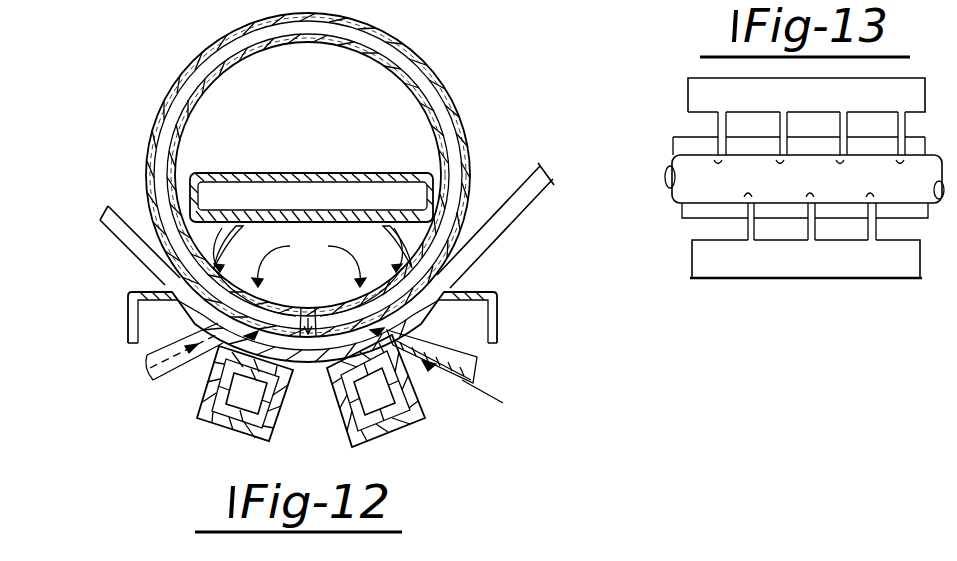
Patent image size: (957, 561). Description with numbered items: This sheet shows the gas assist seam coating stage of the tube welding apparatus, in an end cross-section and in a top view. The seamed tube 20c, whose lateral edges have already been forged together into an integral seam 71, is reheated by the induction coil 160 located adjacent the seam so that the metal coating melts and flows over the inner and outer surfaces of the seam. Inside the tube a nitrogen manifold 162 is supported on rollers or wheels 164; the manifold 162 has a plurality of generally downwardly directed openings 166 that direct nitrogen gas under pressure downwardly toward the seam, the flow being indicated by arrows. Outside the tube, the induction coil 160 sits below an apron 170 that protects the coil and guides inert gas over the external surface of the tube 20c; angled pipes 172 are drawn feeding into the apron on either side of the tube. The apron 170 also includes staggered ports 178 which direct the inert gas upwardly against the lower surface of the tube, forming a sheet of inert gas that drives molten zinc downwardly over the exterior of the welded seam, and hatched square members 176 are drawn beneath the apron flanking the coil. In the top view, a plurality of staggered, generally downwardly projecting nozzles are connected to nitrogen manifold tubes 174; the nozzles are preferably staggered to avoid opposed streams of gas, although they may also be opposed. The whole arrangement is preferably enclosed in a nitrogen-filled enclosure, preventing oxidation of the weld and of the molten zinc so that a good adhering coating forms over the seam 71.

In FIG. 12, the seamed tube 20c is at (427, 72).
In FIG. 12, the induction coil 160 is at (337, 432).
In FIG. 12, the nitrogen manifold 162 is at (289, 172).
In FIG. 12, the rollers or wheels 164 is at (183, 162).
In FIG. 12, the downwardly directed openings 166 is at (393, 207).
In FIG. 12, the integral seam 71 is at (298, 308).
In FIG. 12, the apron 170 is at (128, 322).
In FIG. 12, the inlet pipes 172 is at (128, 247).
In FIG. 13, the inlet pipes 172 is at (877, 225).
In FIG. 13, the nitrogen manifold tubes 174 is at (713, 107).
In FIG. 12, the square tubes 176 is at (210, 420).
In FIG. 12, the staggered ports 178 is at (160, 388).